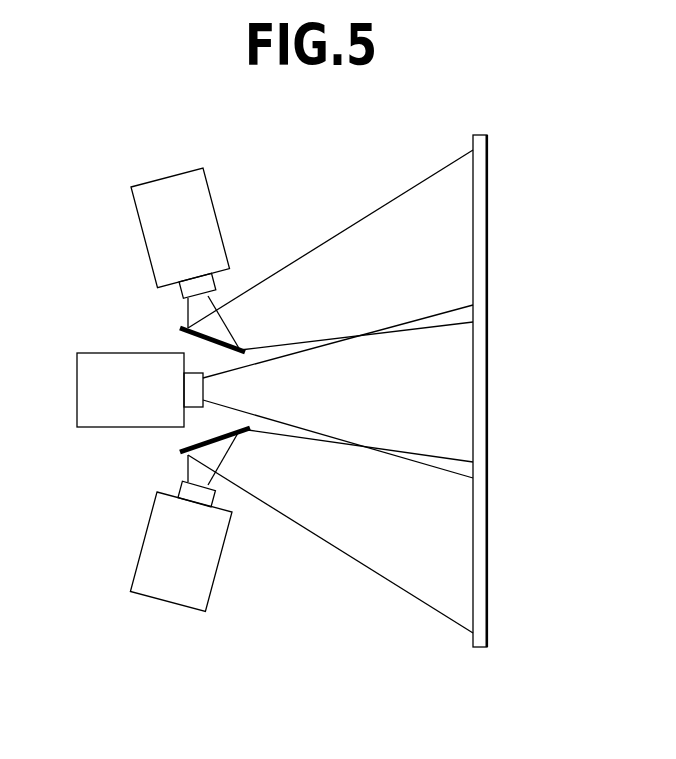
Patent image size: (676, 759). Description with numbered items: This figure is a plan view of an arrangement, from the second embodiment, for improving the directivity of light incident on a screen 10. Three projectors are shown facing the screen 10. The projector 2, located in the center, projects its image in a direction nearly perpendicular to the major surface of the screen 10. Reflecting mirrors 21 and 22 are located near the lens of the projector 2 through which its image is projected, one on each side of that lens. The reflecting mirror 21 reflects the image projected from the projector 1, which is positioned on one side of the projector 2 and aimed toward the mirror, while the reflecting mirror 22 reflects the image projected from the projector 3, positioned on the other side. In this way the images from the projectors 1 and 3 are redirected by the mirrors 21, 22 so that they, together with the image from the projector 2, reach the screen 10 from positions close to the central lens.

The projector 1 is at (152, 560).
The projector 2 is at (92, 385).
The projector 3 is at (158, 233).
The screen 10 is at (483, 258).
The reflecting mirror 21 is at (183, 438).
The reflecting mirror 22 is at (193, 338).